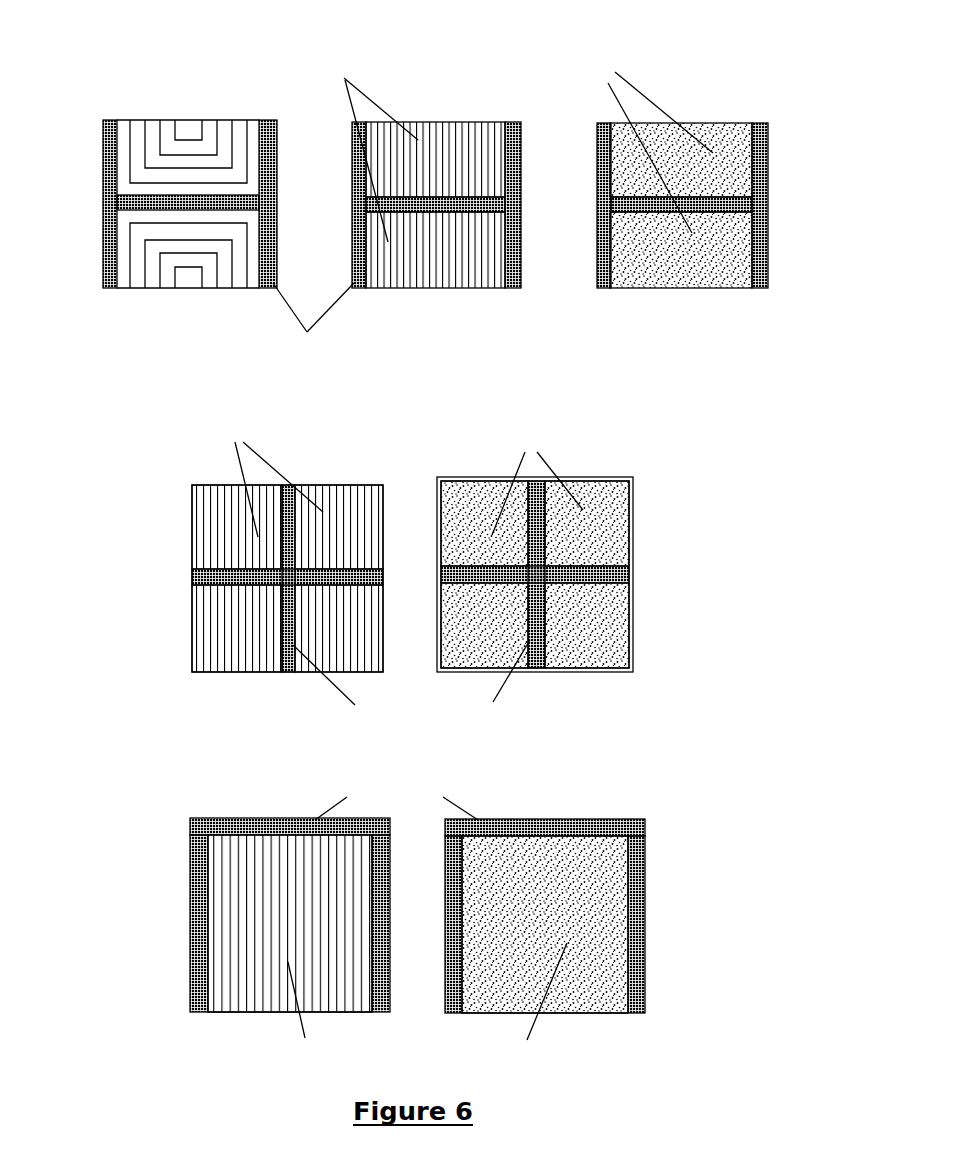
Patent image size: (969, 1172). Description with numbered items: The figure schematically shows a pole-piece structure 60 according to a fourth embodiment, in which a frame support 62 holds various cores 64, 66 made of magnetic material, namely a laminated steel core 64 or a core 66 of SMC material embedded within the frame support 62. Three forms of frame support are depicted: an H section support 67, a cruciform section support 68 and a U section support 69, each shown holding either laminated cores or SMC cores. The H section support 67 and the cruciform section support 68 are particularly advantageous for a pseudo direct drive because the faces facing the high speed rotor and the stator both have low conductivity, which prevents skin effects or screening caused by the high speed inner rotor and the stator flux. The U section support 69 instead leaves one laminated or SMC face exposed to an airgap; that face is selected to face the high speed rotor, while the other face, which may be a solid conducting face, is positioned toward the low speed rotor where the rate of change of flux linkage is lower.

The pole-piece structure 60 is at (72, 574).
The frame support 62 is at (108, 192).
The core 64 is at (187, 145).
The core 66 is at (703, 277).
The H section support 67 is at (112, 290).
The cruciform section support 68 is at (290, 668).
The U section support 69 is at (192, 882).